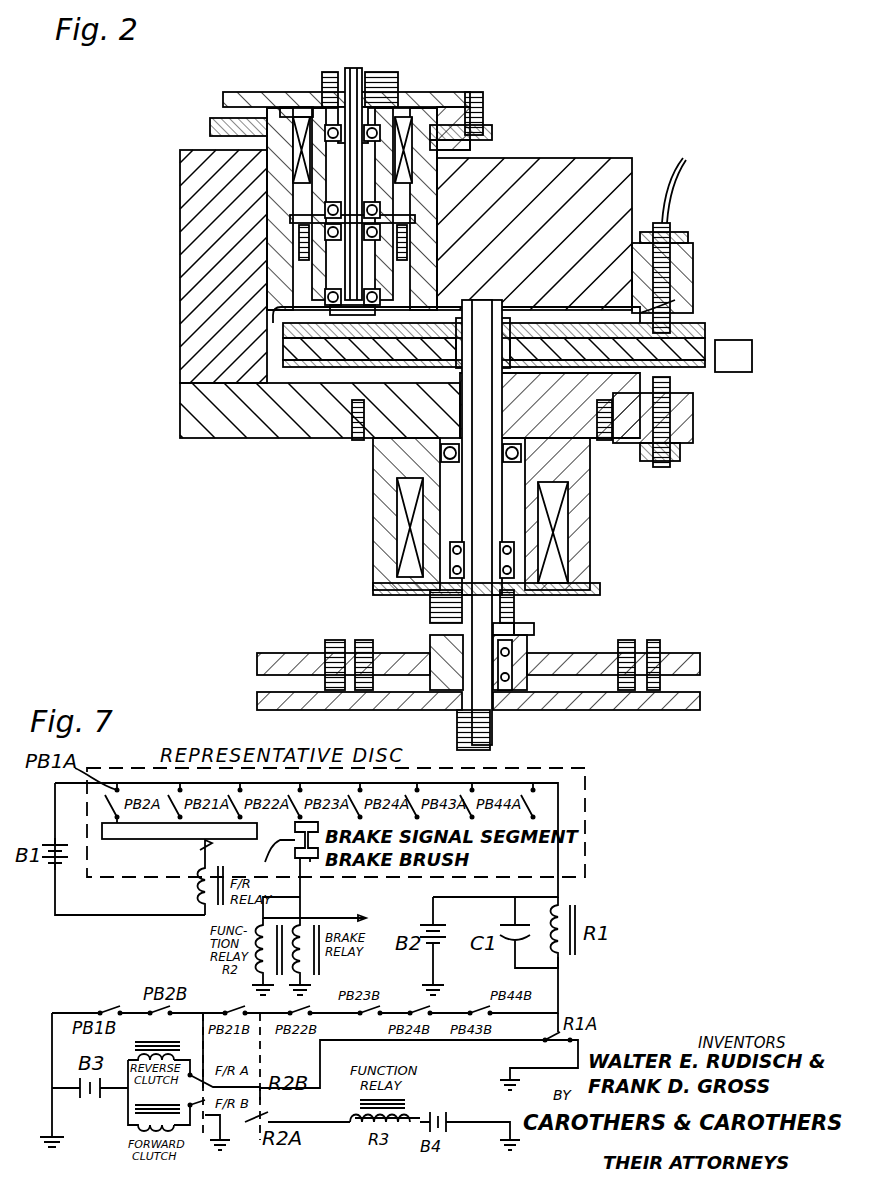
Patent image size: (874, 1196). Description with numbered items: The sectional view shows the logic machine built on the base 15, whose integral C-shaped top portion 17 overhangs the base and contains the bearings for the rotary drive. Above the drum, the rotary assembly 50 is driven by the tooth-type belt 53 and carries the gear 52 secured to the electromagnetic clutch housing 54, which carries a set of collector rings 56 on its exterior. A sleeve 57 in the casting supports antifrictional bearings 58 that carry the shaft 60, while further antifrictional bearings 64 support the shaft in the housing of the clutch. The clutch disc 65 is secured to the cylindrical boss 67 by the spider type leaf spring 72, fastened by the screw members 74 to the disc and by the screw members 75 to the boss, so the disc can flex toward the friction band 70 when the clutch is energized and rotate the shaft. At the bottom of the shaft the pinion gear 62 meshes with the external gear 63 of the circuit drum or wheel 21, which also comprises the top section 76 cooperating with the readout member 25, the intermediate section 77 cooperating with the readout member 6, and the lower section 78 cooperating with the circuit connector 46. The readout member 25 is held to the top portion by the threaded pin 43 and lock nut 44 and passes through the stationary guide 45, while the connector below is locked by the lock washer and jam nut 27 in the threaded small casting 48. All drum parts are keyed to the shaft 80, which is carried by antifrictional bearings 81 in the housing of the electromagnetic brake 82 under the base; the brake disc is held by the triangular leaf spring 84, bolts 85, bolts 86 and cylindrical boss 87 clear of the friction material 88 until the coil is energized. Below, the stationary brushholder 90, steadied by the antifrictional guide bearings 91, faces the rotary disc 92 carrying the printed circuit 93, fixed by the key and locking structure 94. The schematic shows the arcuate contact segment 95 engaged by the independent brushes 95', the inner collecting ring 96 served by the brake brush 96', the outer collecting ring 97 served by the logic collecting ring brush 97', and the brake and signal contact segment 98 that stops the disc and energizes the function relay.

In FIG. 2, the readout member 6 is at (752, 352).
In FIG. 2, the base 15 is at (178, 428).
In FIG. 2, the C-shaped top portion 17 is at (615, 182).
In FIG. 2, the circuit drum or wheel 21 is at (283, 350).
In FIG. 2, the readout member 25 is at (693, 262).
In FIG. 2, the lock washer and jam nut 27 is at (680, 455).
In FIG. 2, the threaded pin 43 is at (667, 210).
In FIG. 2, the lock nut 44 is at (672, 240).
In FIG. 2, the stationary guide 45 is at (693, 282).
In FIG. 2, the circuit connector 46 is at (672, 388).
In FIG. 2, the threaded small casting 48 is at (690, 420).
In FIG. 2, the rotary assembly 50 is at (255, 92).
In FIG. 2, the intermeshed gears 52 is at (492, 130).
In FIG. 2, the tooth-type belt 53 is at (483, 100).
In FIG. 2, the electromagnetic clutch housing 54 is at (455, 140).
In FIG. 2, the collector rings 56 is at (290, 200).
In FIG. 2, the sleeve 57 is at (390, 288).
In FIG. 2, the antifrictional bearings 58 is at (305, 262).
In FIG. 2, the shaft 60 is at (403, 262).
In FIG. 2, the pinion gear 62 is at (325, 323).
In FIG. 2, the external gear 63 is at (693, 306).
In FIG. 2, the antifrictional bearings 64 is at (380, 208).
In FIG. 2, the clutch disc 65 is at (300, 115).
In FIG. 2, the cylindrical boss 67 is at (370, 80).
In FIG. 2, the friction band 70 is at (437, 112).
In FIG. 2, the spider type leaf spring 72 is at (300, 110).
In FIG. 2, the screw members 74 is at (290, 106).
In FIG. 2, the screw members 75 is at (330, 88).
In FIG. 2, the top section of circuit drum 76 is at (560, 354).
In FIG. 2, the intermediate section of circuit drum 77 is at (700, 345).
In FIG. 2, the lower section of circuit drum 78 is at (494, 351).
In FIG. 2, the shaft 80 is at (483, 522).
In FIG. 2, the antifrictional bearings 81 is at (440, 460).
In FIG. 2, the electromagnetic brake 82 is at (410, 514).
In FIG. 2, the triangular leaf spring 84 is at (520, 600).
In FIG. 2, the bolts 85 is at (540, 605).
In FIG. 2, the bolts 86 is at (530, 632).
In FIG. 2, the cylindrical boss 87 is at (430, 608).
In FIG. 2, the friction material 88 is at (600, 586).
In FIG. 2, the stationary brushholder 90 is at (260, 668).
In FIG. 2, the antifrictional guide bearings 91 is at (435, 660).
In FIG. 2, the rotary disc 92 is at (640, 712).
In FIG. 2, the printed circuit 93 is at (572, 712).
In FIG. 2, the key and locking structure 94 is at (492, 738).
In FIG. 2, the arcuate contact segment 95 is at (467, 729).
In FIG. 7, the arcuate contact segment 95 is at (173, 854).
In FIG. 2, the independent brushes 95' is at (476, 650).
In FIG. 7, the independent brushes 95' is at (327, 808).
In FIG. 2, the inner collecting ring 96 is at (377, 717).
In FIG. 2, the brake brush 96' is at (363, 650).
In FIG. 7, the brake brush 96' is at (279, 882).
In FIG. 2, the outer collecting ring 97 is at (703, 690).
In FIG. 2, the logic collecting ring brush 97' is at (682, 654).
In FIG. 7, the logic collecting ring brush 97' is at (194, 862).
In FIG. 7, the brake and signal contact segment 98 is at (290, 854).